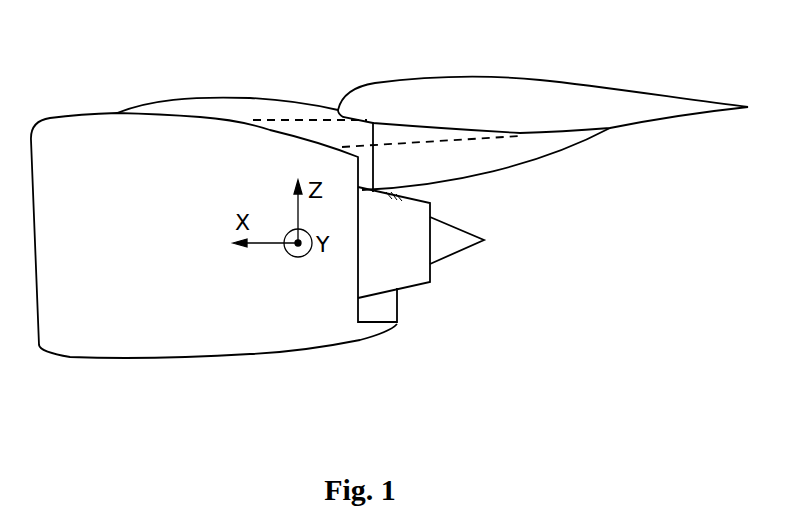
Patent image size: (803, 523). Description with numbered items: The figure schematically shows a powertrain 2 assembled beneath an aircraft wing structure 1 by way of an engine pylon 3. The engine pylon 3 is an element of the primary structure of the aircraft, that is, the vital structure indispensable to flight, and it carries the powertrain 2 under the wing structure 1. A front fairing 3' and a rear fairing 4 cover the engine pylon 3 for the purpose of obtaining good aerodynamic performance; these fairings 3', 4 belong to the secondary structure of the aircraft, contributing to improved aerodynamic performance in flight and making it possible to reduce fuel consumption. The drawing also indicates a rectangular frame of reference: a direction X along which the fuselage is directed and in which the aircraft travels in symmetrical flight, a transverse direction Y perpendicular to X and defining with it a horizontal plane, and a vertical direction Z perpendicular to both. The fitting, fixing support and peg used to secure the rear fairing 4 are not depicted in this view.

The aircraft wing structure 1 is at (563, 97).
The powertrain 2 is at (128, 347).
The engine pylon 3 is at (386, 102).
The front fairing 3' is at (227, 66).
The rear fairing 4 is at (493, 163).